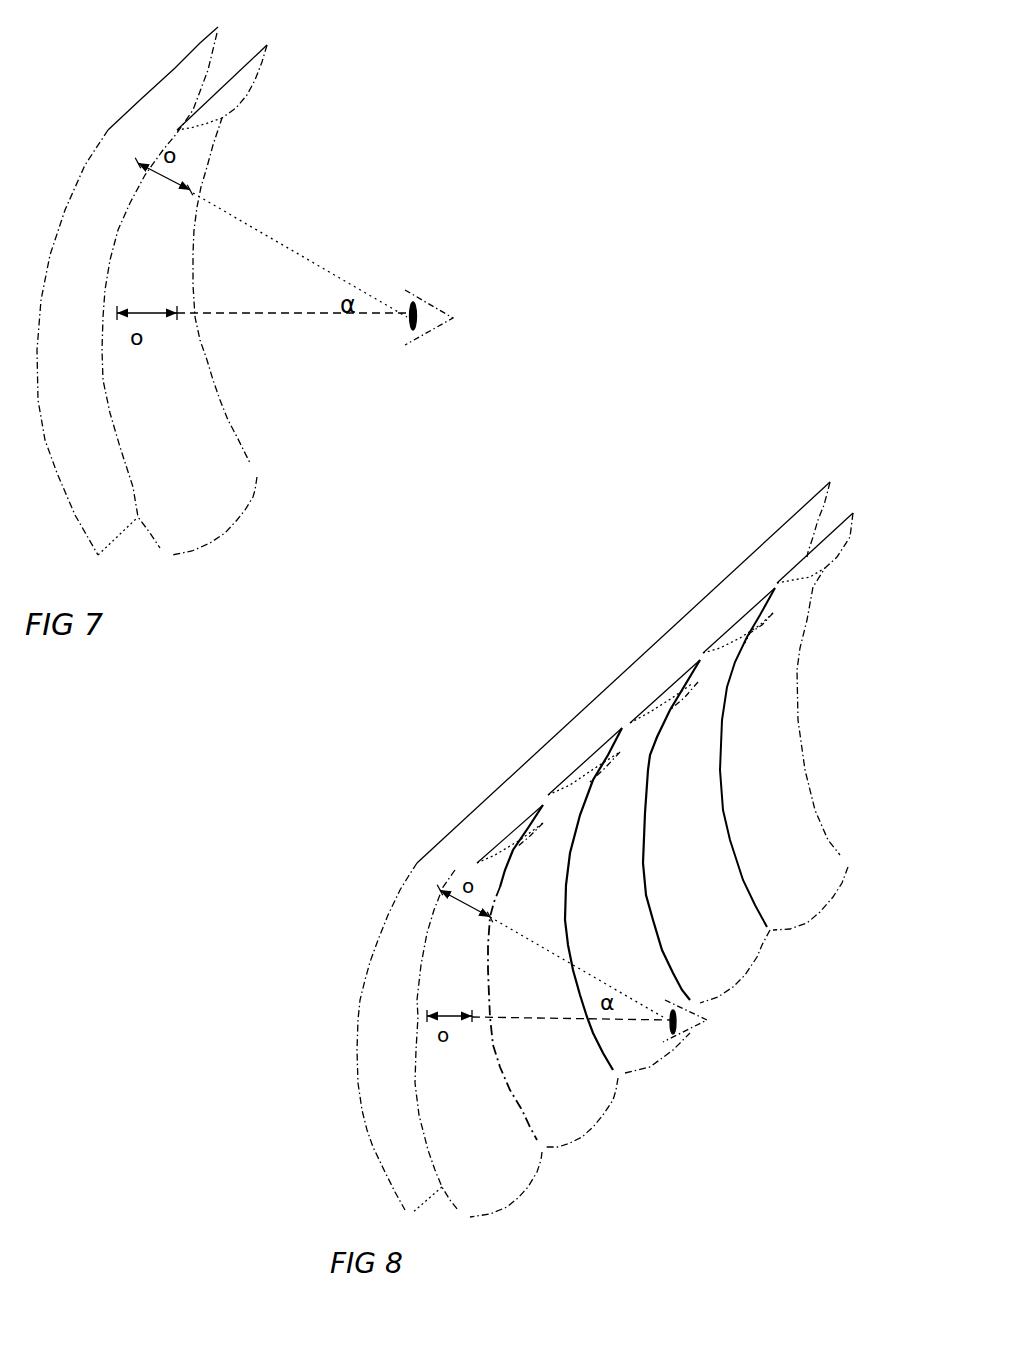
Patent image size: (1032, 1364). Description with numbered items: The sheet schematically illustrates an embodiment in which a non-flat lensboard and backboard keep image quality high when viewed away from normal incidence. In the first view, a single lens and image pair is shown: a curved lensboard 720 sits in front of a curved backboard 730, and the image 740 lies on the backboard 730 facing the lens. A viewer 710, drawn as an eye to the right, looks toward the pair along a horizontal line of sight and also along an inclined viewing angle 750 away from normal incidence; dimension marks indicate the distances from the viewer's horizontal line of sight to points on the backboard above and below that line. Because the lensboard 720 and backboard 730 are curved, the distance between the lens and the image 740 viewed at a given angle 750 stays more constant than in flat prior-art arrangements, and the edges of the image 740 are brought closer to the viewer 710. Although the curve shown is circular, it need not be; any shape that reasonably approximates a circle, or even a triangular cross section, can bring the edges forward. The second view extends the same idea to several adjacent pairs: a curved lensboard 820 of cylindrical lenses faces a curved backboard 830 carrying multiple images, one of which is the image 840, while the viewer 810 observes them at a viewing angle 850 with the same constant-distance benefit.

In FIG. 7, the viewer 710 is at (430, 339).
In FIG. 7, the lensboard 720 is at (232, 300).
In FIG. 7, the backboard 730 is at (127, 291).
In FIG. 7, the image 740 is at (147, 311).
In FIG. 7, the viewing angle 750 is at (300, 255).
In FIG. 8, the viewer 810 is at (705, 1039).
In FIG. 8, the lensboard 820 is at (514, 1022).
In FIG. 8, the backboard 830 is at (591, 860).
In FIG. 8, the image 840 is at (413, 1040).
In FIG. 8, the viewing angle 850 is at (576, 967).